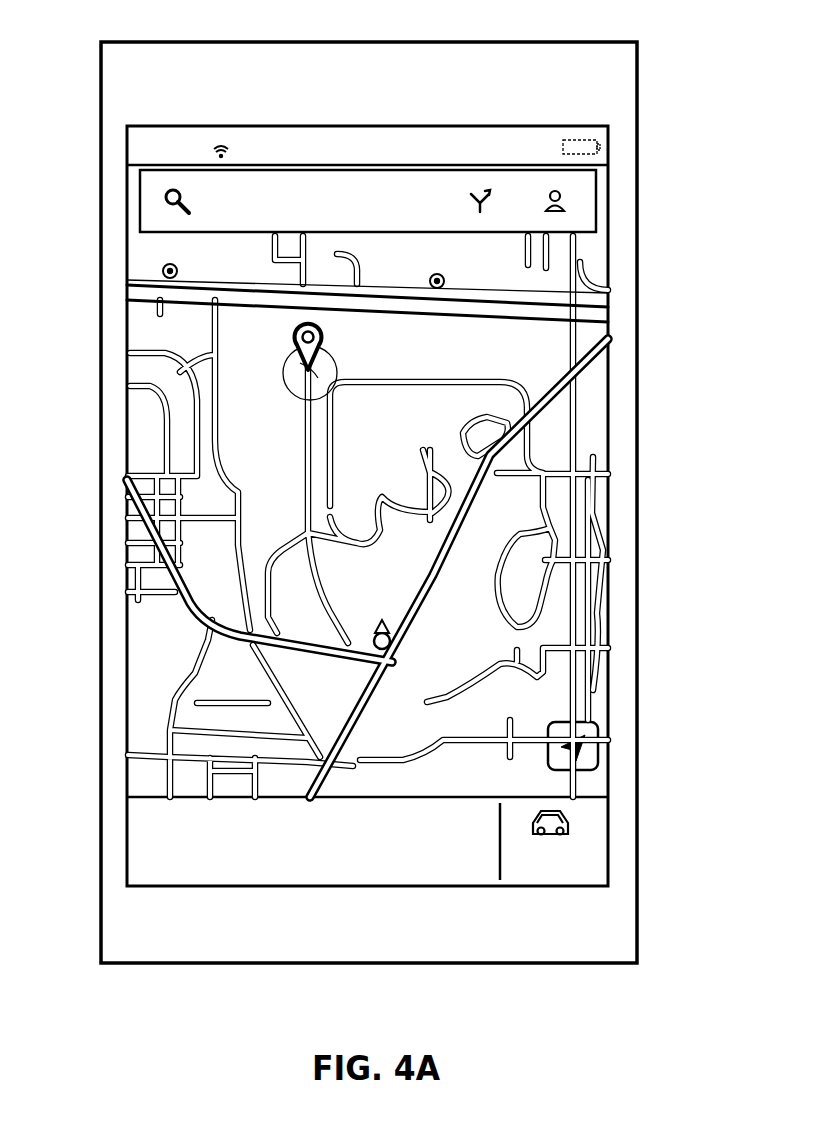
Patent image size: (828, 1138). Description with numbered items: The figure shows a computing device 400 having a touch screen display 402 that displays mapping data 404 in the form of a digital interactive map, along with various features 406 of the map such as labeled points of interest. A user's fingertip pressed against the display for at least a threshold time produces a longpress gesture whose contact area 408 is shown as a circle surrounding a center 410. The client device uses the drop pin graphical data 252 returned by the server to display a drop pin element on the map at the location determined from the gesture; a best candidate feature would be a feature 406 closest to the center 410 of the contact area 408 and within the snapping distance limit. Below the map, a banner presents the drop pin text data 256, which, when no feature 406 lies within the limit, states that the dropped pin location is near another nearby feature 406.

The computing device 400 is at (546, 42).
The touch screen display 402 is at (577, 253).
The mapping data 404 is at (163, 490).
The features 406 is at (248, 367).
The drop pin graphical data 252 is at (323, 335).
The contact area 408 is at (337, 362).
The center of the contact area 410 is at (293, 362).
The drop pin text data 256 is at (165, 824).